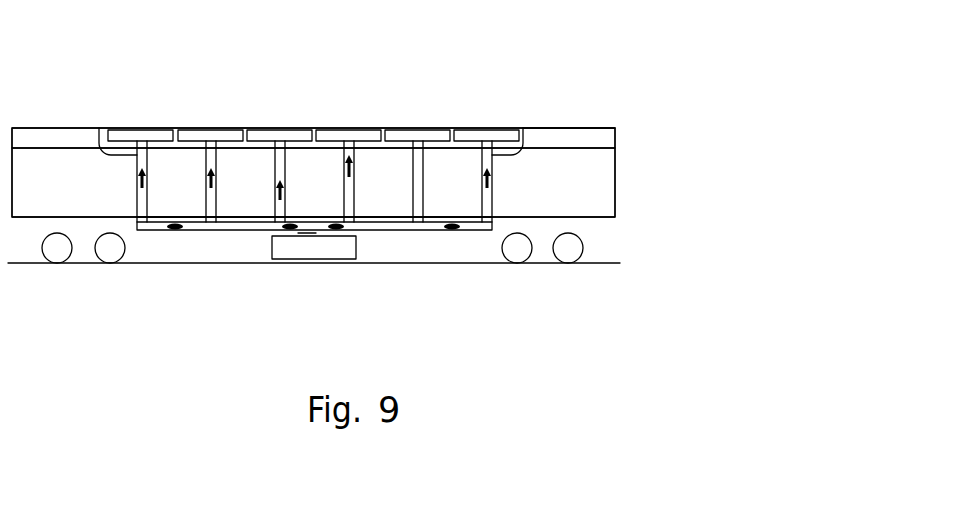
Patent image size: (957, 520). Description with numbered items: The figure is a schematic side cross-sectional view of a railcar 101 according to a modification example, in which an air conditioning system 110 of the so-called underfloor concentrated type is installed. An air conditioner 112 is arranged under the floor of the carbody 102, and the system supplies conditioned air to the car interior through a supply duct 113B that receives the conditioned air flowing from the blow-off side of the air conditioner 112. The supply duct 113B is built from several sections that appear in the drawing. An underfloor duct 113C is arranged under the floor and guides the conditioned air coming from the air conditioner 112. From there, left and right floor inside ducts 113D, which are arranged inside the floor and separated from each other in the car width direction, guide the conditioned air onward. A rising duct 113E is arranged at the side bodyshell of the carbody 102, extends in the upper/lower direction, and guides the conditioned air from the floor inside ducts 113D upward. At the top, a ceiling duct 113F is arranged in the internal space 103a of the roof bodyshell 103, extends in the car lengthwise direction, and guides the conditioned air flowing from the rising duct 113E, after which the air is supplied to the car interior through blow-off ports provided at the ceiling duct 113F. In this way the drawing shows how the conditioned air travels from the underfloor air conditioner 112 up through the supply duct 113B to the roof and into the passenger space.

The railcar 101 is at (615, 91).
The carbody 102 is at (603, 161).
The roof bodyshell 103 is at (617, 137).
The internal space 103a is at (545, 138).
The air conditioning system 110 is at (365, 247).
The air conditioner 112 is at (272, 250).
The supply duct 113B is at (170, 242).
The underfloor duct 113C is at (312, 233).
The floor inside ducts 113D is at (240, 226).
The rising duct 113E is at (98, 132).
The ceiling duct 113F is at (153, 137).